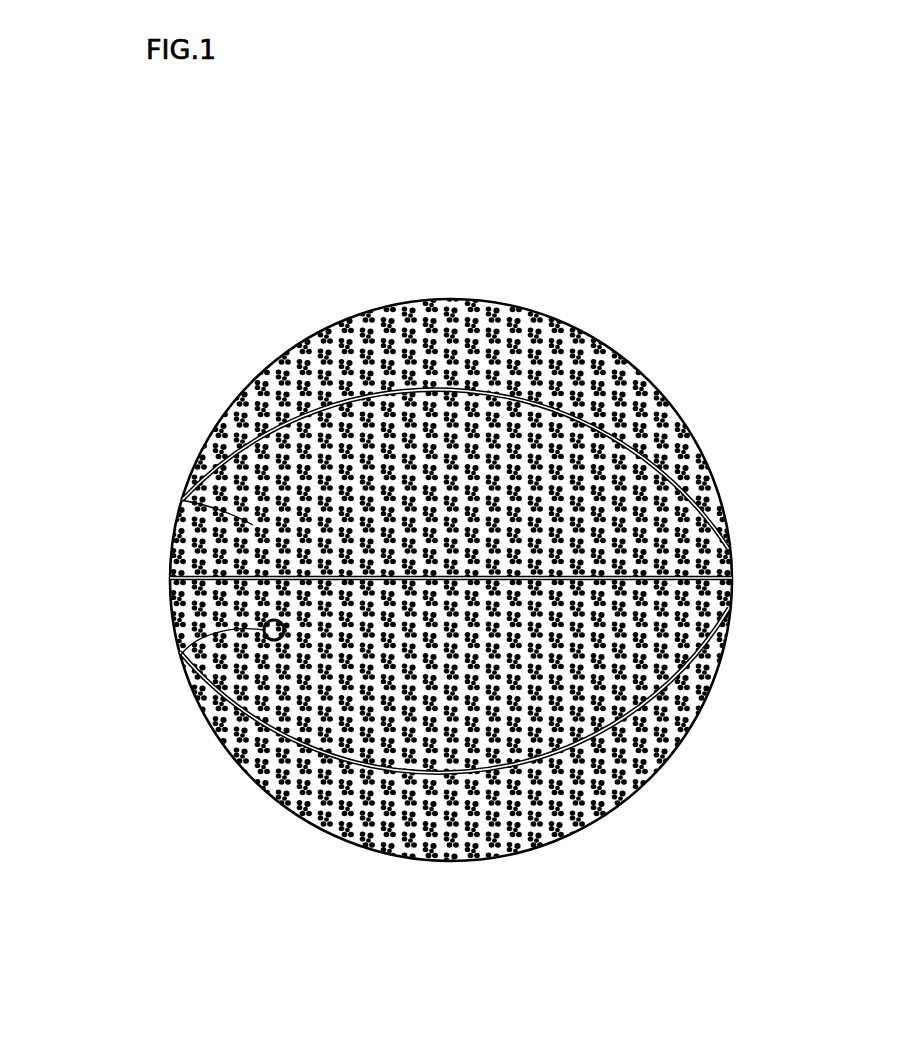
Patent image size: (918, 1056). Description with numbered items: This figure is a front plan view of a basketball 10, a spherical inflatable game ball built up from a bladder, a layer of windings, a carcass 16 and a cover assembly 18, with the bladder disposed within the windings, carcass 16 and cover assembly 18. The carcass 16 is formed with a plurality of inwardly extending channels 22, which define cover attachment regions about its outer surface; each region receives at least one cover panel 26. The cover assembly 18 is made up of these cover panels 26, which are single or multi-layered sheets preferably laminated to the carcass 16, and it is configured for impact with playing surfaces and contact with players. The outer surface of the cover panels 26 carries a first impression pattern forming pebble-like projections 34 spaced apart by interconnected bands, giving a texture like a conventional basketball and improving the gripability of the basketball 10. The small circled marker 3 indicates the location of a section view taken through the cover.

The basketball 10 is at (677, 188).
The cover assembly 18 is at (652, 377).
The channels 22 is at (228, 462).
The pebble-like projections 34 is at (343, 813).
The carcass 16 is at (717, 490).
The cover panel 26 is at (181, 500).
The section indicator 3 is at (181, 655).